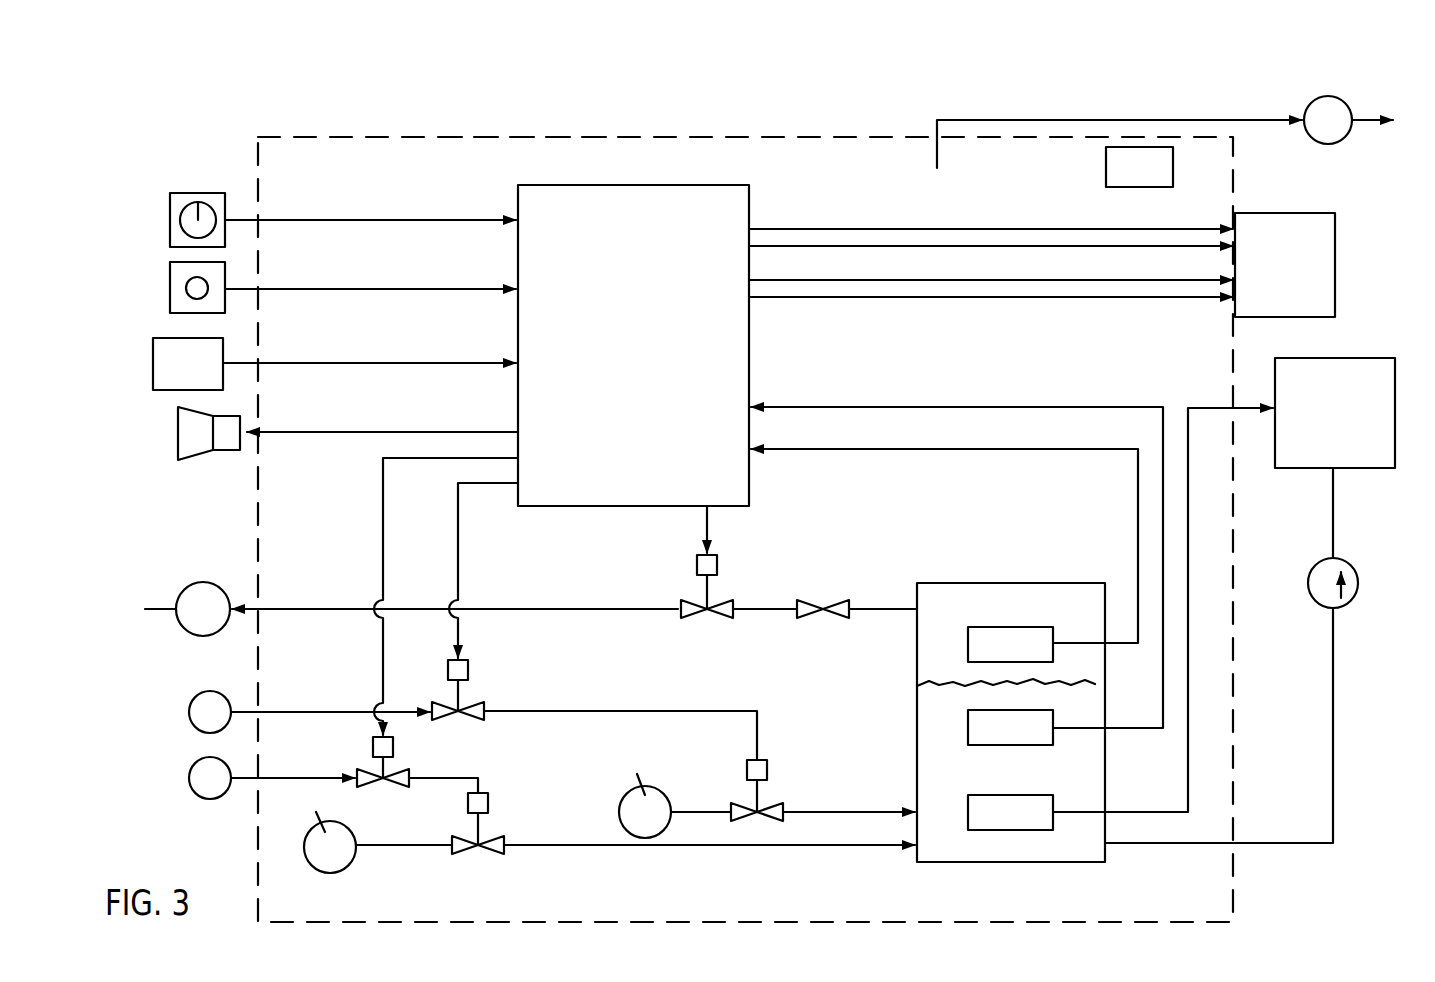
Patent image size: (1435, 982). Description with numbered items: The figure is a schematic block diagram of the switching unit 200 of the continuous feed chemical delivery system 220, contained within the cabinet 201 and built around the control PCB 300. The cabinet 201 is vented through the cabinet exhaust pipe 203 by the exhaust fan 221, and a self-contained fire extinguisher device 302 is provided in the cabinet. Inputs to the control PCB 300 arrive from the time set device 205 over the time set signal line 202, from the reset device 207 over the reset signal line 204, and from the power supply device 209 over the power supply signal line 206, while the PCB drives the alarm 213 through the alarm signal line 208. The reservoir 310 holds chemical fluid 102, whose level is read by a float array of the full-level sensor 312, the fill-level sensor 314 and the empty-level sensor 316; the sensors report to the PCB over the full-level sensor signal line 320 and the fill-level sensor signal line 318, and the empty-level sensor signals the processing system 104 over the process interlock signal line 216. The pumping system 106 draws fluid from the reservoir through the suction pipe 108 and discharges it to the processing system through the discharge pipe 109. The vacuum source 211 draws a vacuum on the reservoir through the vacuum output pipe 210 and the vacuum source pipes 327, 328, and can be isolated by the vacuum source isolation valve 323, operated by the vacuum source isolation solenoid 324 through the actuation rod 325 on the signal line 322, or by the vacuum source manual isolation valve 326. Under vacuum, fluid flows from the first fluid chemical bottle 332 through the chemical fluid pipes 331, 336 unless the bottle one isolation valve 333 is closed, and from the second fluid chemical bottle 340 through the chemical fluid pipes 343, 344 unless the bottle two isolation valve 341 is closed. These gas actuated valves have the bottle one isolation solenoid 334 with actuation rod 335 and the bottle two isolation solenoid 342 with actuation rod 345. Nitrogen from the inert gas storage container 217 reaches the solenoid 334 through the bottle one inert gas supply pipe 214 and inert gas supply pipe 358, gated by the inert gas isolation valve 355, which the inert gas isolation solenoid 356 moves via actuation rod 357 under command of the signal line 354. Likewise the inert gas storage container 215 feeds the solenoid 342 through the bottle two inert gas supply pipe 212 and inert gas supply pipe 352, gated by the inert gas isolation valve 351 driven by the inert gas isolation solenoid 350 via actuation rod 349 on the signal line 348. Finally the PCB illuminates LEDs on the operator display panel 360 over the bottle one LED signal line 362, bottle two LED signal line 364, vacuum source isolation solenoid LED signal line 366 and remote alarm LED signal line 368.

The switching unit 200 is at (293, 150).
The cabinet 201 is at (516, 133).
The time set signal line 202 is at (338, 223).
The cabinet exhaust pipe 203 is at (1012, 118).
The reset signal line 204 is at (297, 292).
The time set device 205 is at (170, 205).
The power supply signal line 206 is at (347, 366).
The reset device 207 is at (170, 281).
The alarm signal line 208 is at (296, 435).
The power supply device 209 is at (165, 365).
The vacuum output pipe 210 is at (305, 612).
The vacuum source 211 is at (203, 582).
The bottle #2 inert gas supply pipe 212 is at (323, 710).
The alarm 213 is at (183, 433).
The bottle #1 inert gas supply pipe 214 is at (268, 776).
The inert gas storage container 215 is at (190, 720).
The process interlock signal line 216 is at (1210, 406).
The inert gas storage container 217 is at (190, 786).
The continuous feed chemical delivery system 220 is at (1201, 108).
The exhaust fan 221 is at (1328, 99).
The control PCB 300 is at (603, 508).
The fire extinguisher device 302 is at (1157, 177).
The reservoir 310 is at (1032, 578).
The full-level sensor 312 is at (985, 626).
The fill-level sensor 314 is at (1053, 739).
The empty-level sensor 316 is at (1053, 800).
The fill-level sensor signal line 318 is at (918, 405).
The full-level sensor signal line 320 is at (859, 452).
The vacuum source isolation solenoid signal line 322 is at (712, 533).
The vacuum source isolation valve 323 is at (686, 615).
The vacuum source isolation solenoid 324 is at (695, 565).
The actuation rod 325 is at (700, 594).
The vacuum source manual isolation valve 326 is at (810, 600).
The vacuum source pipe 327 is at (764, 612).
The vacuum source pipe 328 is at (868, 607).
The chemical fluid pipe 331 is at (391, 848).
The first fluid chemical bottle 332 is at (323, 871).
The bottle #1 isolation valve 333 is at (458, 858).
The bottle #1 isolation solenoid 334 is at (490, 804).
The actuation rod 335 is at (488, 833).
The chemical fluid pipe 336 is at (570, 848).
The second fluid chemical bottle 340 is at (622, 816).
The bottle #2 isolation valve 341 is at (738, 822).
The bottle #2 isolation solenoid 342 is at (768, 769).
The chemical fluid pipe 343 is at (695, 815).
The chemical fluid pipe 344 is at (858, 810).
The actuation rod 345 is at (760, 798).
The bottle 2 gas isolation solenoid signal line 348 is at (460, 549).
The actuation rod 349 is at (455, 699).
The inert gas isolation solenoid 350 is at (470, 669).
The inert gas isolation valve 351 is at (478, 721).
The inert gas supply pipe 352 is at (603, 710).
The bottle 1 gas isolation solenoid signal line 354 is at (381, 550).
The inert gas isolation valve 355 is at (400, 790).
The inert gas isolation solenoid 356 is at (372, 746).
The actuation rod 357 is at (390, 762).
The inert gas supply pipe 358 is at (483, 786).
The operator display panel 360 is at (1328, 231).
The bottle #1 LED signal line 362 is at (802, 228).
The bottle #2 LED signal line 364 is at (893, 245).
The vacuum source isolation solenoid LED signal line 366 is at (944, 283).
The remote alarm LED signal line 368 is at (843, 300).
The chemical fluid 102 is at (1088, 703).
The processing system 104 is at (1363, 359).
The pumping system 106 is at (1352, 578).
The suction pipe 108 is at (1336, 660).
The discharge pipe 109 is at (1336, 518).